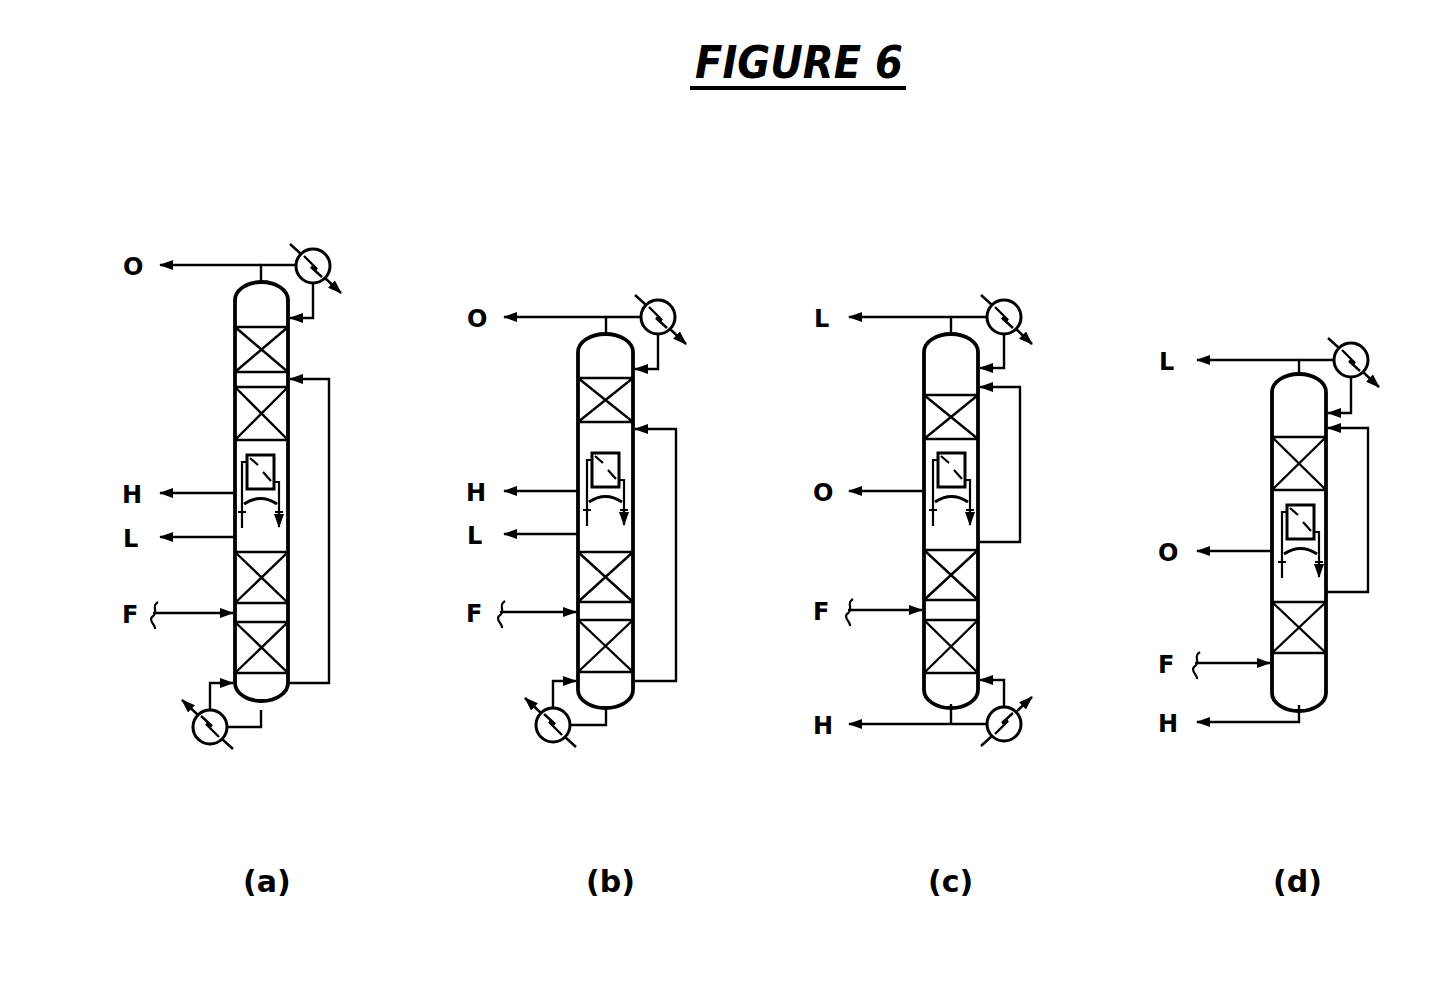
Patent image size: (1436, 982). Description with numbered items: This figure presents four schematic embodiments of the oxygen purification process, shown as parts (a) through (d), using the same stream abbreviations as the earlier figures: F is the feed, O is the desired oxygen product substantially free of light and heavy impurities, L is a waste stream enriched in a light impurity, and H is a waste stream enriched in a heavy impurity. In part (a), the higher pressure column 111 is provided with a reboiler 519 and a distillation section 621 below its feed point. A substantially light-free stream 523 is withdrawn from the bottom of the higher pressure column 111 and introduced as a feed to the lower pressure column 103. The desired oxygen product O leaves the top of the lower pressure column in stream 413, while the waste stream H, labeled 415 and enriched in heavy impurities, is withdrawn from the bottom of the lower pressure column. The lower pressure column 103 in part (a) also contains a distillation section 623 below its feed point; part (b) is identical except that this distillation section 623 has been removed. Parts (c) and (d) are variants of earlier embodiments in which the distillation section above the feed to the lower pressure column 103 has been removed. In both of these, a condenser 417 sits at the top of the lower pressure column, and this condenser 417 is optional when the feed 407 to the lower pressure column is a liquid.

The higher pressure column 111 is at (280, 710).
The lower pressure column 103 is at (232, 382).
The distillation section 623 is at (243, 425).
The distillation section 621 is at (245, 640).
The stream 413 is at (237, 265).
The waste stream 415 is at (216, 492).
The reboiler 519 is at (210, 745).
The substantially light-free stream 523 is at (329, 593).
The condenser 417 is at (1015, 302).
The feed 407 is at (1020, 471).